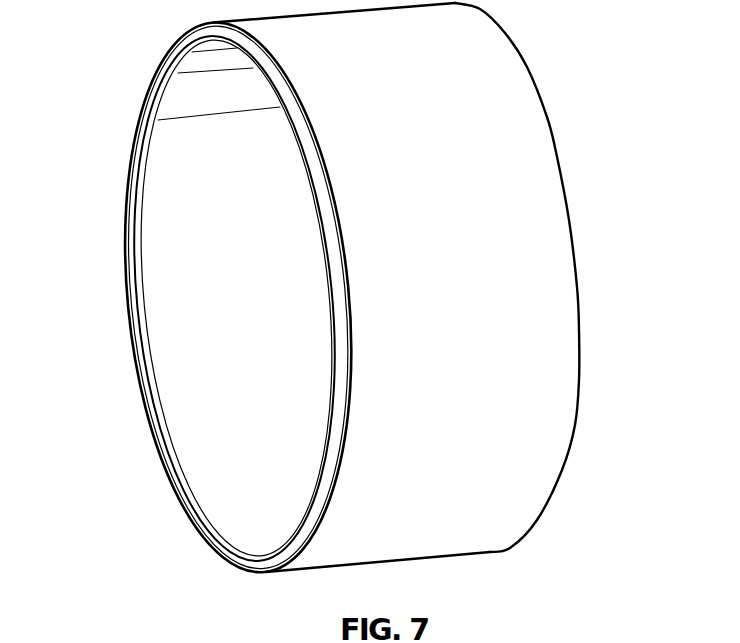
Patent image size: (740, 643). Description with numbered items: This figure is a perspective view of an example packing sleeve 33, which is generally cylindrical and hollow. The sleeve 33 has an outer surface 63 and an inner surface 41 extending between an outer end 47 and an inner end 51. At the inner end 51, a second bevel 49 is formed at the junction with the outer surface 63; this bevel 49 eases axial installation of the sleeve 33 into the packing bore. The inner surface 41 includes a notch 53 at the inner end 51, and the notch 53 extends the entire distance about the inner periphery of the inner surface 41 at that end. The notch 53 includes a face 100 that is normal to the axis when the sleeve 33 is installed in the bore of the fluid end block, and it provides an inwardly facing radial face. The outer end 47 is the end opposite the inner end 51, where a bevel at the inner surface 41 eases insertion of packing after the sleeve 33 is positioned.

The outer end 47 is at (548, 115).
The sleeve 33 is at (558, 377).
The outer surface 63 is at (530, 220).
The face 100 is at (185, 500).
The inner end 51 is at (123, 291).
The notch 53 is at (158, 430).
The second bevel 49 is at (328, 213).
The inner surface 41 is at (198, 347).